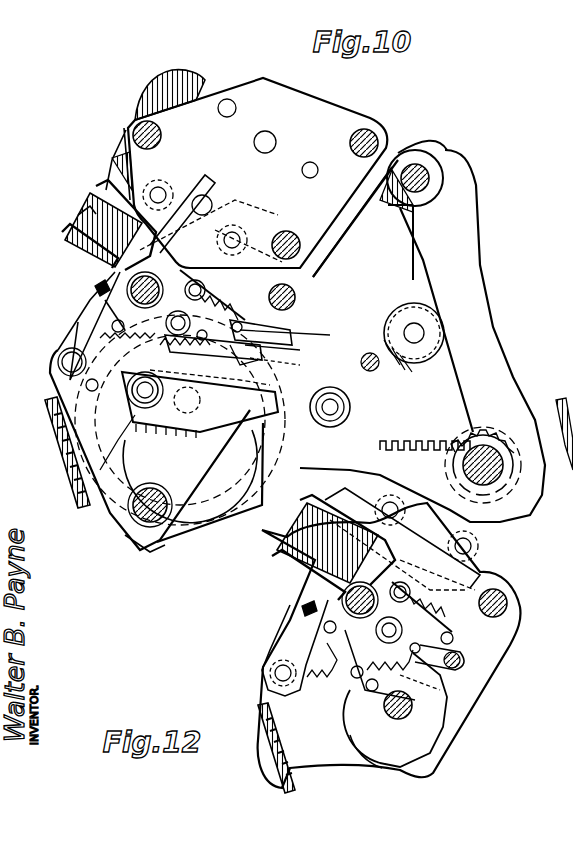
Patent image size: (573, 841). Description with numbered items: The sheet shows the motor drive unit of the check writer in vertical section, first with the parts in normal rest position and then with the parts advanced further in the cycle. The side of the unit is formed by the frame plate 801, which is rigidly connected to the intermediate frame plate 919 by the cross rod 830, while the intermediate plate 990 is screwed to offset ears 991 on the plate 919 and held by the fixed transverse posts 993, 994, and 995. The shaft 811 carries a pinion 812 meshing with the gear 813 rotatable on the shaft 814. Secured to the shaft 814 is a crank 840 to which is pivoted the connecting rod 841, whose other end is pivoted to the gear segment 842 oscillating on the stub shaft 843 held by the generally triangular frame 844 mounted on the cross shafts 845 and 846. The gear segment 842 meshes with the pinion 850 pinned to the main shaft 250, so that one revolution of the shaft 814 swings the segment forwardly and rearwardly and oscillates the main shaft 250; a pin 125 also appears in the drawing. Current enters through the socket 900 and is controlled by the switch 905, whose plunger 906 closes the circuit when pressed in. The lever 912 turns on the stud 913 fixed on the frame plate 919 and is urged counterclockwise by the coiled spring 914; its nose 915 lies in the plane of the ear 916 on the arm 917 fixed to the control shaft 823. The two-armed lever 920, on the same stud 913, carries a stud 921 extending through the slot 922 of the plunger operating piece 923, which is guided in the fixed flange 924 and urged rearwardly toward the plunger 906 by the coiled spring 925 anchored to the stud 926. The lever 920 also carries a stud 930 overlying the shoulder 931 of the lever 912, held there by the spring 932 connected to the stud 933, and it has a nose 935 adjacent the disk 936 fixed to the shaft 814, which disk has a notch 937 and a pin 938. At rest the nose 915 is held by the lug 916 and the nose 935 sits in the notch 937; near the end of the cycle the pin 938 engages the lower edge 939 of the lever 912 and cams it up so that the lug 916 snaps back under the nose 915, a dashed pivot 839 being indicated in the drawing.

In FIG. 10, the pin 125 is at (370, 352).
In FIG. 10, the main shaft 250 is at (486, 468).
In FIG. 10, the frame plate 801 is at (118, 152).
In FIG. 10, the shaft 811 is at (73, 256).
In FIG. 12, the shaft 811 is at (312, 588).
In FIG. 10, the pinion 812 is at (80, 216).
In FIG. 10, the gear 813 is at (212, 413).
In FIG. 10, the shaft 814 is at (330, 387).
In FIG. 12, the shaft 814 is at (395, 710).
In FIG. 10, the control shaft 823 is at (58, 362).
In FIG. 12, the control shaft 823 is at (272, 675).
In FIG. 10, the cross rod 830 is at (156, 547).
In FIG. 10, the dashed pivot 839 is at (187, 400).
In FIG. 10, the crank 840 is at (140, 445).
In FIG. 10, the connecting rod 841 is at (398, 451).
In FIG. 10, the gear segment 842 is at (422, 336).
In FIG. 10, the stub shaft 843 is at (424, 333).
In FIG. 10, the triangular frame 844 is at (380, 210).
In FIG. 10, the cross shaft 845 is at (426, 166).
In FIG. 10, the cross shaft 846 is at (247, 238).
In FIG. 12, the cross shaft 846 is at (505, 596).
In FIG. 10, the pinion 850 is at (490, 435).
In FIG. 10, the socket 900 is at (52, 432).
In FIG. 12, the socket 900 is at (265, 728).
In FIG. 10, the switch 905 is at (96, 208).
In FIG. 12, the switch 905 is at (290, 548).
In FIG. 10, the plunger 906 is at (105, 192).
In FIG. 12, the plunger 906 is at (322, 505).
In FIG. 10, the lever 912 is at (105, 318).
In FIG. 12, the lever 912 is at (345, 672).
In FIG. 10, the stud 913 is at (172, 330).
In FIG. 12, the stud 913 is at (378, 634).
In FIG. 10, the coiled spring 914 is at (112, 328).
In FIG. 12, the coiled spring 914 is at (275, 690).
In FIG. 10, the nose 915 is at (96, 276).
In FIG. 12, the nose 915 is at (340, 595).
In FIG. 10, the ear 916 is at (95, 287).
In FIG. 12, the ear 916 is at (302, 610).
In FIG. 10, the arm 917 is at (100, 303).
In FIG. 12, the arm 917 is at (292, 635).
In FIG. 10, the frame plate 919 is at (215, 508).
In FIG. 12, the frame plate 919 is at (512, 620).
In FIG. 10, the two-armed lever 920 is at (290, 350).
In FIG. 12, the two-armed lever 920 is at (465, 652).
In FIG. 10, the stud 921 is at (232, 226).
In FIG. 12, the stud 921 is at (445, 565).
In FIG. 10, the slot 922 is at (240, 195).
In FIG. 12, the slot 922 is at (445, 580).
In FIG. 10, the plunger operating piece 923 is at (210, 203).
In FIG. 12, the plunger operating piece 923 is at (395, 545).
In FIG. 10, the fixed flange 924 is at (176, 225).
In FIG. 12, the fixed flange 924 is at (380, 525).
In FIG. 10, the coiled spring 925 is at (207, 292).
In FIG. 12, the coiled spring 925 is at (425, 598).
In FIG. 10, the stud 926 is at (238, 320).
In FIG. 12, the stud 926 is at (455, 636).
In FIG. 10, the stud 930 is at (252, 328).
In FIG. 12, the stud 930 is at (462, 660).
In FIG. 10, the shoulder 931 is at (290, 337).
In FIG. 12, the shoulder 931 is at (455, 668).
In FIG. 10, the spring 932 is at (203, 342).
In FIG. 12, the spring 932 is at (420, 715).
In FIG. 10, the stud 933 is at (86, 385).
In FIG. 12, the stud 933 is at (355, 690).
In FIG. 10, the nose 935 is at (292, 364).
In FIG. 12, the nose 935 is at (445, 672).
In FIG. 10, the disk 936 is at (197, 448).
In FIG. 12, the disk 936 is at (425, 745).
In FIG. 10, the notch 937 is at (300, 355).
In FIG. 12, the notch 937 is at (430, 700).
In FIG. 10, the pin 938 is at (155, 390).
In FIG. 12, the pin 938 is at (385, 710).
In FIG. 10, the lower edge 939 is at (230, 376).
In FIG. 12, the lower edge 939 is at (440, 680).
In FIG. 10, the intermediate plate 990 is at (330, 108).
In FIG. 10, the offset ears 991 is at (166, 182).
In FIG. 12, the offset ears 991 is at (392, 502).
In FIG. 10, the transverse post 993 is at (137, 103).
In FIG. 10, the transverse post 994 is at (374, 132).
In FIG. 10, the transverse post 995 is at (292, 233).